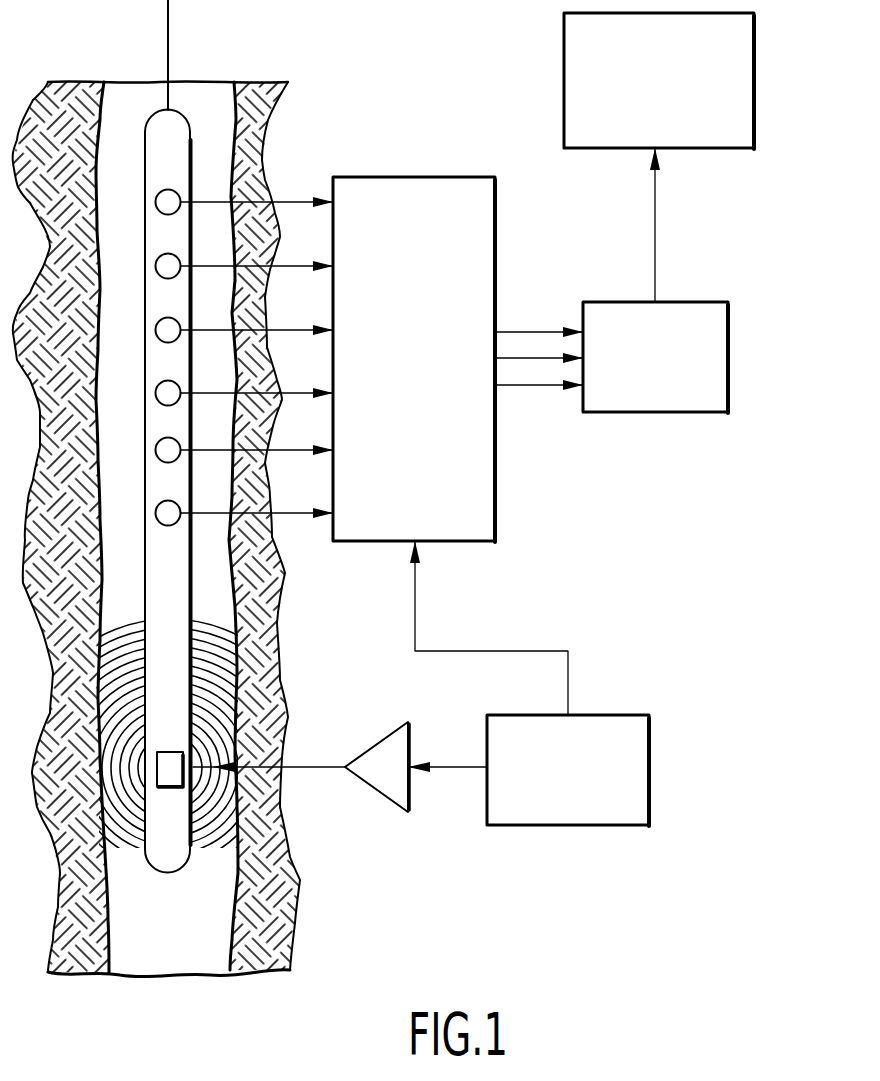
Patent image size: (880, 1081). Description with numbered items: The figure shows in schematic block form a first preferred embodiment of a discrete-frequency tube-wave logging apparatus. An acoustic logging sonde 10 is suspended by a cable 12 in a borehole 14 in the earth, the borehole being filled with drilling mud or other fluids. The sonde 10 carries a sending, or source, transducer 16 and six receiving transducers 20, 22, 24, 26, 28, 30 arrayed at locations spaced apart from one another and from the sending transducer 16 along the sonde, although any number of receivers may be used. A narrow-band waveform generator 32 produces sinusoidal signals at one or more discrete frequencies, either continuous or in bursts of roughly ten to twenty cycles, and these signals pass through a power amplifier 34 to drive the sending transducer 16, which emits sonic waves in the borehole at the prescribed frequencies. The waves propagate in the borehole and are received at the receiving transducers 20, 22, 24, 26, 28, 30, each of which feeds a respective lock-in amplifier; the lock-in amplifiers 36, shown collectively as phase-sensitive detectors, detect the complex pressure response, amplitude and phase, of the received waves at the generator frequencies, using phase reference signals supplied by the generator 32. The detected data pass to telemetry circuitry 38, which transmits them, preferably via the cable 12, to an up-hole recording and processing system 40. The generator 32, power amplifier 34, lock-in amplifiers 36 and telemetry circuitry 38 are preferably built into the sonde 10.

The acoustic logging sonde 10 is at (145, 108).
The cable 12 is at (168, 38).
The borehole 14 is at (186, 938).
The sending transducer 16 is at (170, 752).
The receiving transducer 20 is at (168, 527).
The receiving transducer 22 is at (160, 460).
The receiving transducer 24 is at (160, 403).
The receiving transducer 26 is at (160, 340).
The receiving transducer 28 is at (160, 276).
The receiving transducer 30 is at (160, 212).
The narrow-band waveform generator 32 is at (649, 762).
The power amplifier 34 is at (380, 750).
The lock-in amplifiers 36 is at (423, 495).
The telemetry circuitry 38 is at (728, 325).
The up-hole recording and processing system 40 is at (754, 99).